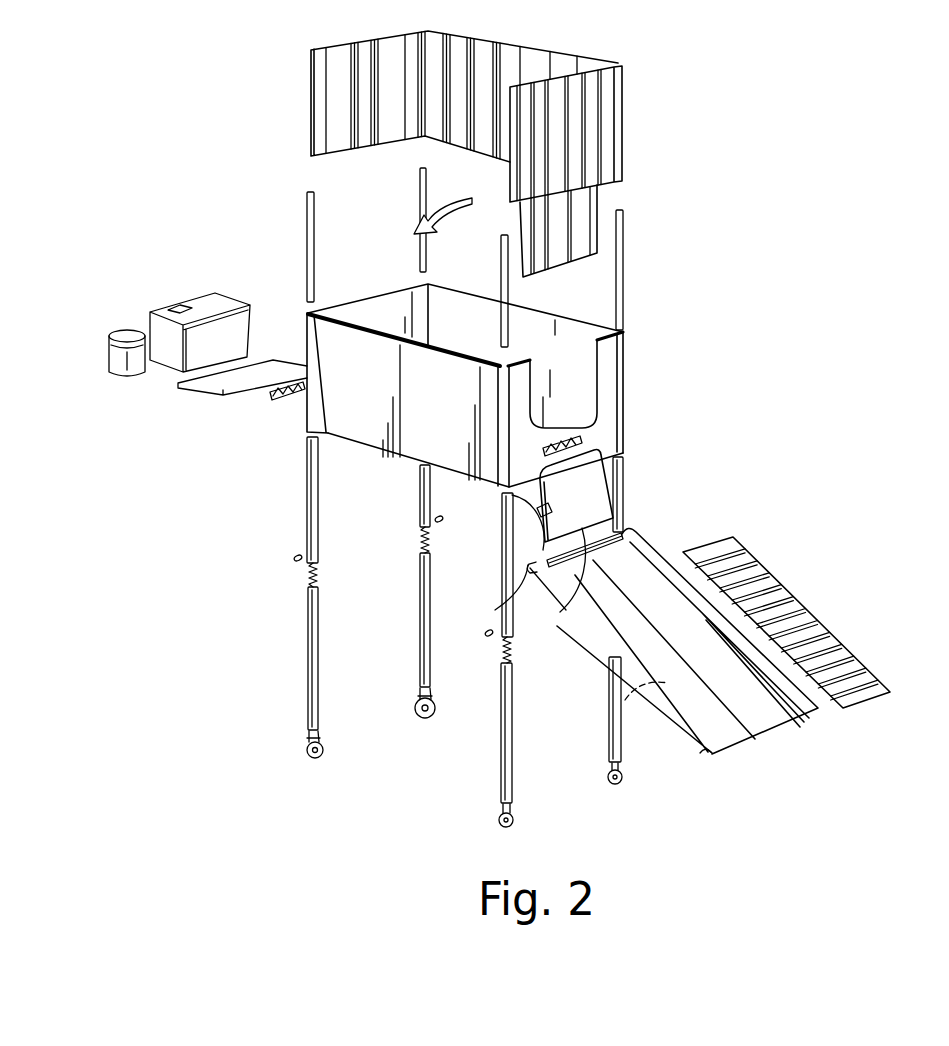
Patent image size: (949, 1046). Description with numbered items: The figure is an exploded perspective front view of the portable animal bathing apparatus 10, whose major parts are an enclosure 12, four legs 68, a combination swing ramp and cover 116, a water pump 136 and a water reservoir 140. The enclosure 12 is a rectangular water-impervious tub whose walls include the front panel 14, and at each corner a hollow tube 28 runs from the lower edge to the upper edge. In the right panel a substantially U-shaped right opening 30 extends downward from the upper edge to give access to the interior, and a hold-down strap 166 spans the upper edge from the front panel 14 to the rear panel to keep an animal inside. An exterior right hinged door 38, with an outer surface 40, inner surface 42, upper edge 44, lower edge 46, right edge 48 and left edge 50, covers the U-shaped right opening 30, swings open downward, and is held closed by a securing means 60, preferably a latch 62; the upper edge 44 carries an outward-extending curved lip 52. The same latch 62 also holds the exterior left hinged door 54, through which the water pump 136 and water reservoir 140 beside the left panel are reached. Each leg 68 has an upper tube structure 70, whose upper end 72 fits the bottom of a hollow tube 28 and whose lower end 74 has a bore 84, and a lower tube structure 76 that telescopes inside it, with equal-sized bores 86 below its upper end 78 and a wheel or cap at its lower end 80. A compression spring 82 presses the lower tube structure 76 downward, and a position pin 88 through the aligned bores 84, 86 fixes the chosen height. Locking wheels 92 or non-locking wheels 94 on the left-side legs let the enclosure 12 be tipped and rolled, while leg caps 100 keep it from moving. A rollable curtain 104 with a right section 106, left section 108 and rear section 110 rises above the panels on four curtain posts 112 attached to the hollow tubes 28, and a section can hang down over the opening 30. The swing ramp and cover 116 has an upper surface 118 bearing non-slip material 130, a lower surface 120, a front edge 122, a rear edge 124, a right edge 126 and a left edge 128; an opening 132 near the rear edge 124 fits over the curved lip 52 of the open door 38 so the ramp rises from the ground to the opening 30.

The portable animal bathing apparatus 10 is at (933, 52).
The enclosure 12 is at (448, 387).
The front panel 14 is at (448, 387).
The hollow tube 28 is at (505, 432).
The U-shaped right opening 30 is at (575, 385).
The right hinged door 38 is at (637, 469).
The outer surface 40 is at (617, 469).
The inner surface 42 is at (637, 469).
The upper edge 44 is at (540, 567).
The lower edge 46 is at (590, 437).
The right edge 48 is at (603, 484).
The left edge 50 is at (540, 510).
The curved lip 52 is at (528, 567).
The left hinged door 54 is at (222, 387).
The securing means 60 is at (529, 552).
The latch 62 is at (547, 562).
The leg 68 is at (350, 634).
The upper tube structure 70 is at (307, 497).
The upper end 72 is at (307, 436).
The lower end 74 is at (309, 592).
The lower tube structure 76 is at (350, 662).
The upper end 78 is at (382, 576).
The lower end 80 is at (341, 740).
The compression spring 82 is at (318, 575).
The bore 84 is at (420, 523).
The equal-sized bores 86 is at (308, 618).
The position pin 88 is at (294, 558).
The locking wheel 92 is at (286, 740).
The non-locking wheel 94 is at (286, 740).
The leg cap 100 is at (497, 823).
The curtain 104 is at (467, 154).
The right section 106 is at (583, 133).
The left section 108 is at (311, 60).
The rear section 110 is at (565, 52).
The curtain post 112 is at (307, 212).
The swing ramp and cover 116 is at (578, 620).
The upper surface 118 is at (638, 652).
The lower surface 120 is at (708, 636).
The front edge 122 is at (709, 636).
The rear edge 124 is at (622, 528).
The right edge 126 is at (789, 611).
The left edge 128 is at (709, 636).
The non-slip material 130 is at (733, 547).
The opening 132 is at (510, 604).
The water pump 136 is at (108, 338).
The water reservoir 140 is at (190, 303).
The hold-down strap 166 is at (412, 229).